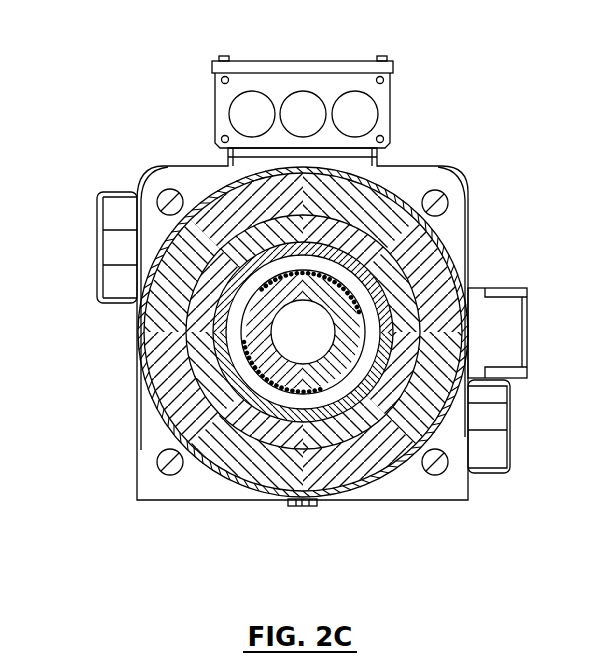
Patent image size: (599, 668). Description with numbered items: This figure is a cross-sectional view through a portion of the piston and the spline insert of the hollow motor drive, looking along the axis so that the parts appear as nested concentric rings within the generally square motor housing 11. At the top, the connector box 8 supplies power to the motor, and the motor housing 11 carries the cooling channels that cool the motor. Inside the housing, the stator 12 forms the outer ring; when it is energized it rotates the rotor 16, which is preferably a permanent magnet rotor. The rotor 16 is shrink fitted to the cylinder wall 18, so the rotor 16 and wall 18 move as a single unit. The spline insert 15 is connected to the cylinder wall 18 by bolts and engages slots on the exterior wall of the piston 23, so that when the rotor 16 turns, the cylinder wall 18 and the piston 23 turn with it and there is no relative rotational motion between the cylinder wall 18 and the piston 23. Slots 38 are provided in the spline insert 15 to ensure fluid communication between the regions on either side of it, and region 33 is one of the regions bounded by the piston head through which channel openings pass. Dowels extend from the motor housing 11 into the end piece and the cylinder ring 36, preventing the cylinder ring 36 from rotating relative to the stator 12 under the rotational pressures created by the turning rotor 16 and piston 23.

The connector box 8 is at (283, 84).
The cylinder ring 36 is at (432, 178).
The slots 38 is at (103, 303).
The motor housing 11 is at (240, 470).
The stator 12 is at (267, 462).
The spline insert 15 is at (412, 257).
The piston 23 is at (183, 370).
The cylinder wall 18 is at (357, 292).
The rotor 16 is at (205, 405).
The region 33 is at (290, 346).